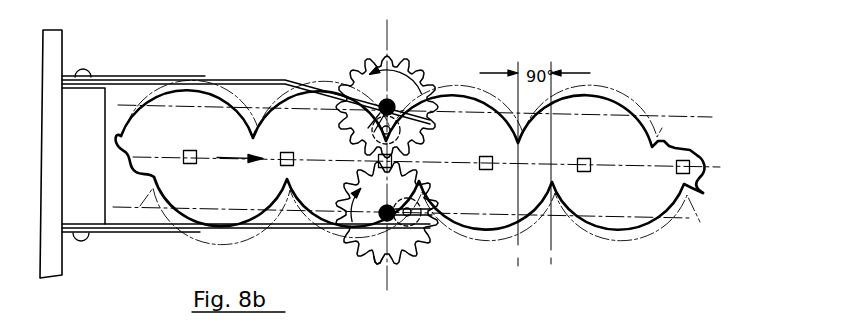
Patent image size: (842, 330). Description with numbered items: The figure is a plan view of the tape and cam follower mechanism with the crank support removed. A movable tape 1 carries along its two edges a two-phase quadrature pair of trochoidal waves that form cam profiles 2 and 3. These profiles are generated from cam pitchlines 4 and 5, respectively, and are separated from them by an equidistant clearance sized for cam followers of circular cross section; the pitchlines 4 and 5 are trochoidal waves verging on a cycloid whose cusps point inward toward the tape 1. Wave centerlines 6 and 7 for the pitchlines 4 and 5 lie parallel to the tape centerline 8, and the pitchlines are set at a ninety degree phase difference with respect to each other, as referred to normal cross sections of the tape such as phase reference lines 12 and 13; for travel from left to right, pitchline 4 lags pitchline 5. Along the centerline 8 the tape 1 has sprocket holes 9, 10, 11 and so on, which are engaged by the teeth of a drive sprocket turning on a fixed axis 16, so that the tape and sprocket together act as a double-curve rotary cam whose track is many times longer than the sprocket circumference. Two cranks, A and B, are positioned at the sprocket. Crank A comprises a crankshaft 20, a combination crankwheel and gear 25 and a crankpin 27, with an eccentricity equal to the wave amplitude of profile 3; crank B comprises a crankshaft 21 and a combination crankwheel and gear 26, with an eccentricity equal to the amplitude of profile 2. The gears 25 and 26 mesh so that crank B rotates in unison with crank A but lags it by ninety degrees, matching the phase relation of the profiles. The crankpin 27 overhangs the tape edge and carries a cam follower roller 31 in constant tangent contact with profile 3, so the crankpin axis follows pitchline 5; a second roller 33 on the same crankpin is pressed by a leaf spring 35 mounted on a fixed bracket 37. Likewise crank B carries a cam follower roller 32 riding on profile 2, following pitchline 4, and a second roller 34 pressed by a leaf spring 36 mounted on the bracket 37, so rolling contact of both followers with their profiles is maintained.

The movable tape 1 is at (692, 152).
The cam profile 2 is at (640, 105).
The cam profile 3 is at (650, 220).
The cam pitchline 4 is at (594, 90).
The cam pitchline 5 is at (628, 239).
The wave centerline 6 is at (688, 116).
The wave centerline 7 is at (676, 218).
The tape centerline 8 is at (708, 166).
The sprocket hole 9 is at (286, 152).
The sprocket hole 10 is at (408, 156).
The sprocket hole 11 is at (486, 156).
The phase reference line 12 is at (517, 247).
The phase reference line 13 is at (550, 248).
The fixed axis 16 is at (393, 35).
The crankshaft 20 is at (370, 232).
The crankshaft 21 is at (394, 99).
The combination crankwheel and gear 25 is at (389, 263).
The combination crankwheel and gear 26 is at (402, 56).
The crankpin 27 is at (428, 326).
The cam follower roller 31 is at (419, 217).
The cam follower roller 32 is at (366, 124).
The second roller 33 is at (400, 201).
The second roller 34 is at (372, 137).
The leaf spring 35 is at (182, 236).
The leaf spring 36 is at (244, 81).
The fixed bracket 37 is at (104, 206).